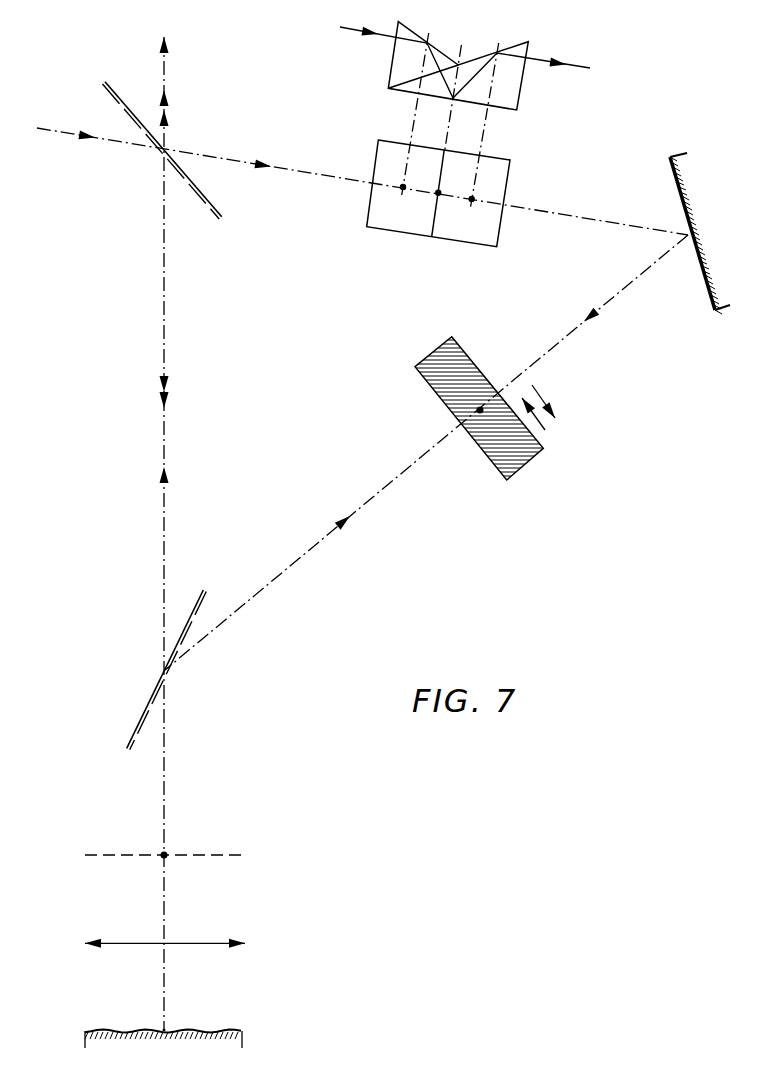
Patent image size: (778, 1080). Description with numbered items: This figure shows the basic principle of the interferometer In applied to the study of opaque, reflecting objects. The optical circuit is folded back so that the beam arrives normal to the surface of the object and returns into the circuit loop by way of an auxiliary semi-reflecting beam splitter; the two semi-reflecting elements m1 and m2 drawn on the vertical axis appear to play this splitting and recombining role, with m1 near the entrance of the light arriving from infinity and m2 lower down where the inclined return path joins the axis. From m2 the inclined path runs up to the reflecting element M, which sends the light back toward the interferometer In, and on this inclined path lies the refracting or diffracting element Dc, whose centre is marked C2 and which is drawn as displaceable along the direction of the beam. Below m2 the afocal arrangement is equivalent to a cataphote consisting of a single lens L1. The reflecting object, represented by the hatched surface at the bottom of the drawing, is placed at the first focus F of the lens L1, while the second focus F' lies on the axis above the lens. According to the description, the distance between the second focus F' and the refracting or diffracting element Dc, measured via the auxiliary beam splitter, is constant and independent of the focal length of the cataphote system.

The first semi-reflecting mirror m1 is at (175, 167).
The second semi-reflecting mirror m2 is at (179, 660).
The interferometer (prism and plate assembly) In is at (461, 134).
The mirror M is at (700, 233).
The compensating device / dispersive plate Dc is at (477, 406).
The center of compensating device C2 is at (480, 410).
The image focal point F' is at (165, 841).
The lens L1 is at (179, 950).
The focal point on surface F is at (146, 1013).